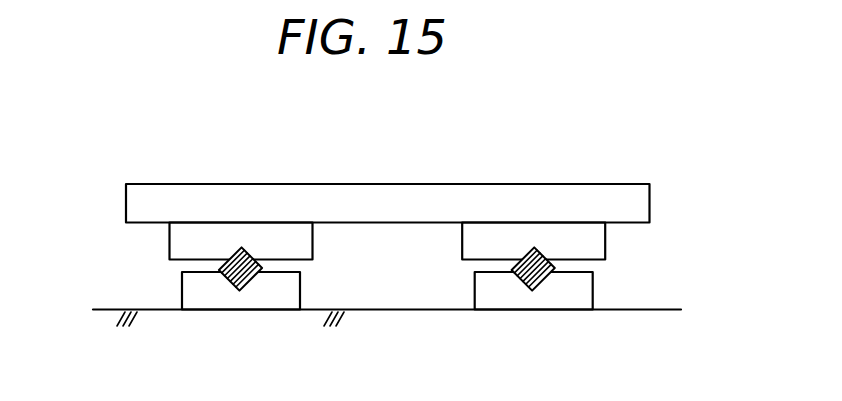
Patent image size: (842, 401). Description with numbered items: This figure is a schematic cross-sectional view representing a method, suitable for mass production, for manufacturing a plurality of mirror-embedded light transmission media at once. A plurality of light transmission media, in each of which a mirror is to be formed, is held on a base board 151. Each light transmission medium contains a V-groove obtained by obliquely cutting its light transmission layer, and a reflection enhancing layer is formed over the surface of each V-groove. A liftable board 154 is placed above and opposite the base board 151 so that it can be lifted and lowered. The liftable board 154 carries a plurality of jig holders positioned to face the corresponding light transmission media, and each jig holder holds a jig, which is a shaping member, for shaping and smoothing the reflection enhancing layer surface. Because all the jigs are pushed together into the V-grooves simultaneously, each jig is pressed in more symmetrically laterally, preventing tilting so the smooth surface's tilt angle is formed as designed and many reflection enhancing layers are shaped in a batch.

The base board 151 is at (110, 309).
The liftable board 154 is at (150, 184).